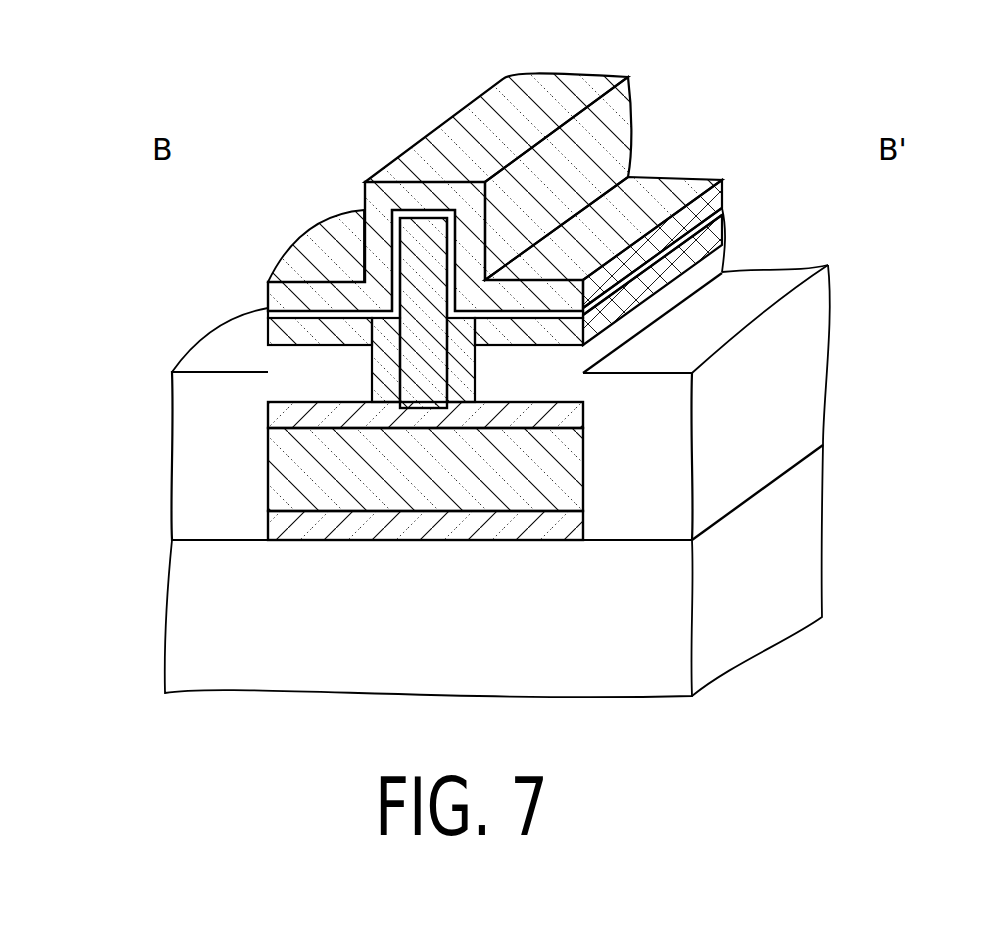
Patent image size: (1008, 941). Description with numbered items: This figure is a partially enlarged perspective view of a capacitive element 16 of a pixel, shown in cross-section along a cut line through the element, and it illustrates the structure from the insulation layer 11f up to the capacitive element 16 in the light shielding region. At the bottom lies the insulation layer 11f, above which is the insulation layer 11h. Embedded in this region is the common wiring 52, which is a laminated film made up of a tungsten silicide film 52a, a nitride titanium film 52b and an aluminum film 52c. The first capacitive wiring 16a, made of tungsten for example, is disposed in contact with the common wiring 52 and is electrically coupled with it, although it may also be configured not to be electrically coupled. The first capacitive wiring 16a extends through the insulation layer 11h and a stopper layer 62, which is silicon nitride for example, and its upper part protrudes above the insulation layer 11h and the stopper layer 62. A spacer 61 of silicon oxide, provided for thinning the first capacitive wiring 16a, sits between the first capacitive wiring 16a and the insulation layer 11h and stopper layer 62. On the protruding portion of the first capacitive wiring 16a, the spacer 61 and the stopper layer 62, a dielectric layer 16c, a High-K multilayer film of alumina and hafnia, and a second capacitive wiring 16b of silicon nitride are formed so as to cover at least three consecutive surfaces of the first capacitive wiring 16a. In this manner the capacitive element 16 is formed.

The insulation layer 11f is at (660, 625).
The insulation layer 11h is at (667, 448).
The common wiring 52 is at (302, 469).
The tungsten silicide film 52a is at (268, 522).
The titanium nitride film 52b is at (268, 465).
The aluminum film 52c is at (268, 408).
The spacer 61 is at (380, 374).
The stopper layer 62 is at (280, 326).
The capacitive element 16 is at (419, 240).
The first capacitive wiring 16a is at (408, 250).
The second capacitive wiring 16b is at (370, 199).
The dielectric layer 16c is at (355, 221).